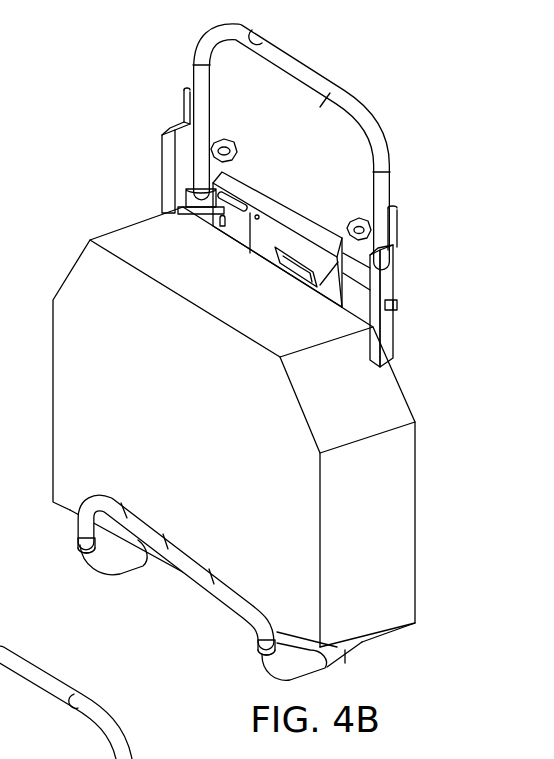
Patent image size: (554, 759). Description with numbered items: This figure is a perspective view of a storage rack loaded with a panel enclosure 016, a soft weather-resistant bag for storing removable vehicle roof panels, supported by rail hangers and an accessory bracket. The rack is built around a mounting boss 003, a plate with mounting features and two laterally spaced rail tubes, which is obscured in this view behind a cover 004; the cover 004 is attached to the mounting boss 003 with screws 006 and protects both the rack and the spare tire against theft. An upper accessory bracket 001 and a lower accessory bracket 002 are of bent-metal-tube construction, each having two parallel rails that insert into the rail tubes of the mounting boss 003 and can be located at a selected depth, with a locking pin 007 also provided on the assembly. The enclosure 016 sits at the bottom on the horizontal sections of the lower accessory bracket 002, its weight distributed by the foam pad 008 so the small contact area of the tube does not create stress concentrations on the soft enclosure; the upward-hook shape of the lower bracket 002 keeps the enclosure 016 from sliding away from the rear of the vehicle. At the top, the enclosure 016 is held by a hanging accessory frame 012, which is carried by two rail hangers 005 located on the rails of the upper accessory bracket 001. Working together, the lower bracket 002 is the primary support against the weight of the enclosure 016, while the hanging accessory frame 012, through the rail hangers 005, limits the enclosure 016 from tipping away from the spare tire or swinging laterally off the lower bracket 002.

The upper accessory bracket 001 is at (222, 32).
The lower accessory bracket 002 is at (93, 510).
The mounting boss 003 is at (240, 205).
The cover 004 is at (325, 237).
The rail hanger 005 is at (215, 142).
The screw 006 is at (338, 262).
The locking pin 007 is at (396, 310).
The foam pad 008 is at (268, 660).
The hanging accessory frame 012 is at (168, 165).
The panel enclosure 016 is at (163, 382).